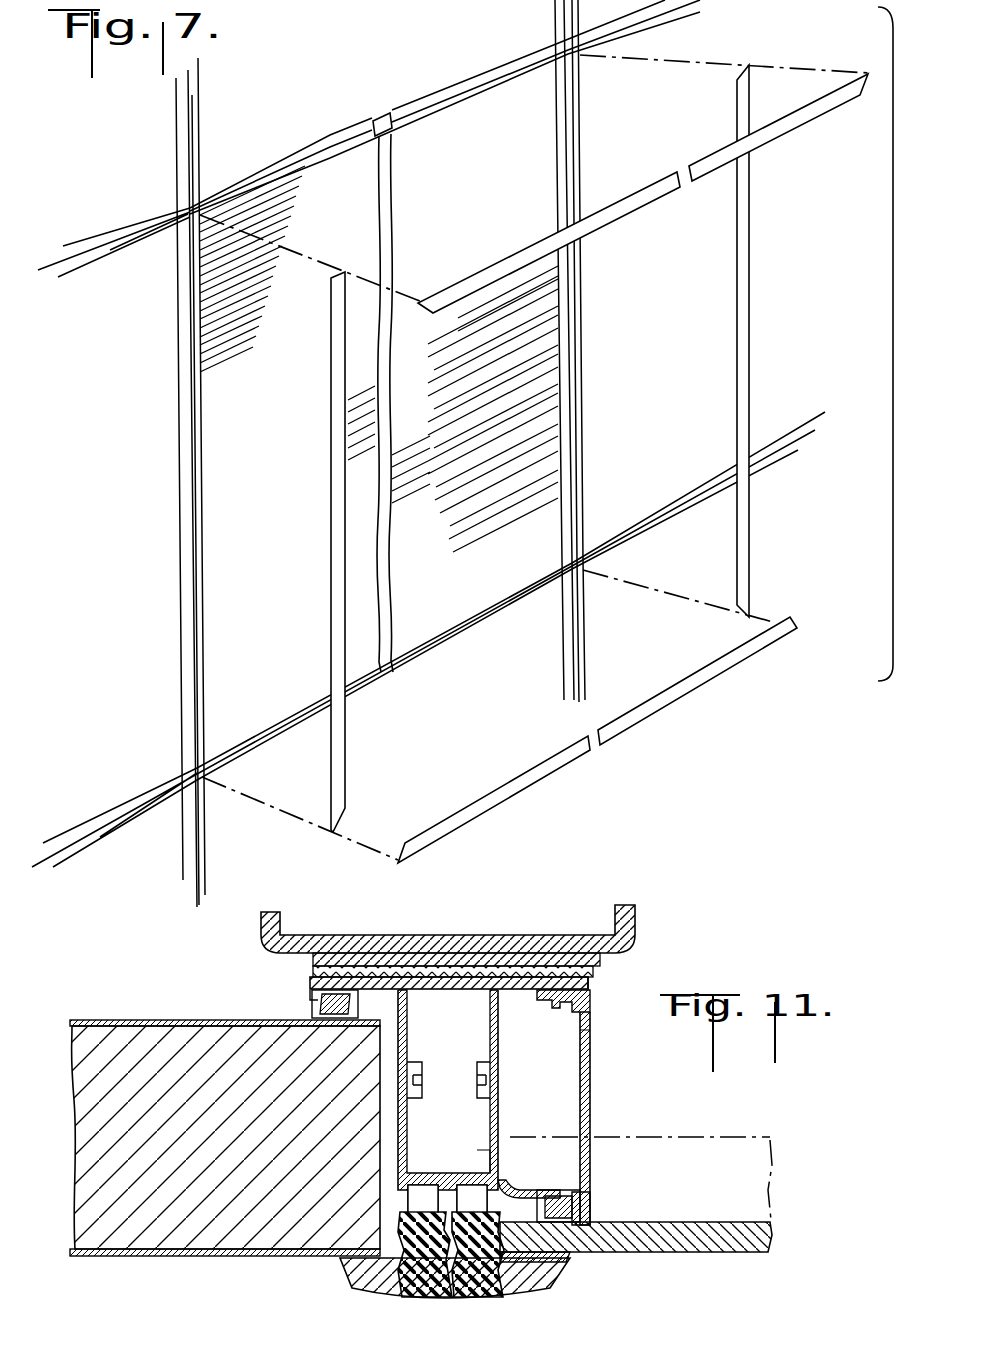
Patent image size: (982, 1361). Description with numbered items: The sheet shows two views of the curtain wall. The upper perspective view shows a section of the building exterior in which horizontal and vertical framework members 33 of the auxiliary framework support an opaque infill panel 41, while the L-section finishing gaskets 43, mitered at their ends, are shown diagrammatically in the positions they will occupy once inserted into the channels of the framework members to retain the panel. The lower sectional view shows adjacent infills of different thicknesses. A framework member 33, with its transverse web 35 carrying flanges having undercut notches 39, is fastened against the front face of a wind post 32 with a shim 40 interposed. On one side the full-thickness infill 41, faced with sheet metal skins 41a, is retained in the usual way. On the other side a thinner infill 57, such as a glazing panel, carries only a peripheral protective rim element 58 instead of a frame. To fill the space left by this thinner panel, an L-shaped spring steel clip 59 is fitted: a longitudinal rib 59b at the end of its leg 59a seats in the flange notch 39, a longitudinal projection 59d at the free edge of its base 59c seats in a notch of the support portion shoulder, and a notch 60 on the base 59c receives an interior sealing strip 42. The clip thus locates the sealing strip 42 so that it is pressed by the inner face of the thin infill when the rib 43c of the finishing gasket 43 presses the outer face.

In FIG. 11, the wind post column 32 is at (262, 940).
In FIG. 7, the framework member 33 is at (344, 125).
In FIG. 11, the framework member 33 is at (396, 1050).
In FIG. 11, the transverse web 35 is at (460, 985).
In FIG. 11, the undercut notch 39 is at (592, 989).
In FIG. 11, the shim 40 is at (512, 972).
In FIG. 7, the infill panel 41 is at (236, 485).
In FIG. 11, the infill panel 41 is at (130, 1261).
In FIG. 11, the sheet metal skin 41a is at (205, 1020).
In FIG. 11, the sealing strip 42 is at (592, 1216).
In FIG. 7, the finishing gasket 43 is at (616, 220).
In FIG. 11, the finishing gasket 43 is at (406, 1302).
In FIG. 11, the rib 43c is at (566, 1262).
In FIG. 11, the thinner infill 57 is at (757, 1120).
In FIG. 11, the protective rim element 58 is at (506, 1260).
In FIG. 11, the spring clip 59 is at (591, 1089).
In FIG. 11, the leg 59a is at (592, 1050).
In FIG. 11, the longitudinal rib 59b is at (556, 1004).
In FIG. 11, the base 59c is at (528, 1186).
In FIG. 11, the longitudinal projection 59d is at (484, 1160).
In FIG. 11, the notch 60 is at (578, 1196).